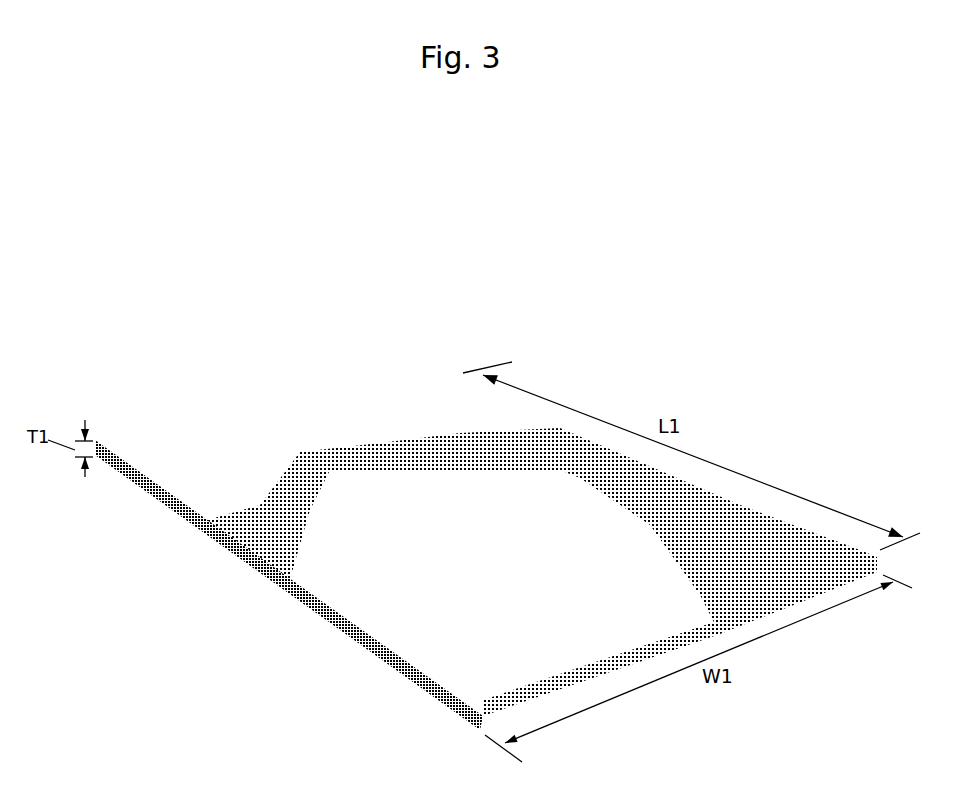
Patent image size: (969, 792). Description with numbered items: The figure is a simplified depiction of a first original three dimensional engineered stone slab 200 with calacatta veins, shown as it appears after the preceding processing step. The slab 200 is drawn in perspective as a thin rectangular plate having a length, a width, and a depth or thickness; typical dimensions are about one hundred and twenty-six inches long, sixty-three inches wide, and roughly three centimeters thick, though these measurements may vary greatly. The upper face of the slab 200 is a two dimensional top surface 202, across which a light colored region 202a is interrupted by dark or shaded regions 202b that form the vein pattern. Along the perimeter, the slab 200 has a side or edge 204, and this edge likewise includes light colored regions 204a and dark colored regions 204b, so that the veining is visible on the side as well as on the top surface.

The first original three dimensional engineered stone slab 200 is at (314, 378).
The two dimensional top surface 202 is at (423, 572).
The light colored region 202a is at (370, 538).
The dark or shaded regions 202b is at (285, 510).
The side or edge 204 is at (293, 592).
The light colored regions 204a is at (277, 583).
The dark colored regions 204b is at (227, 543).